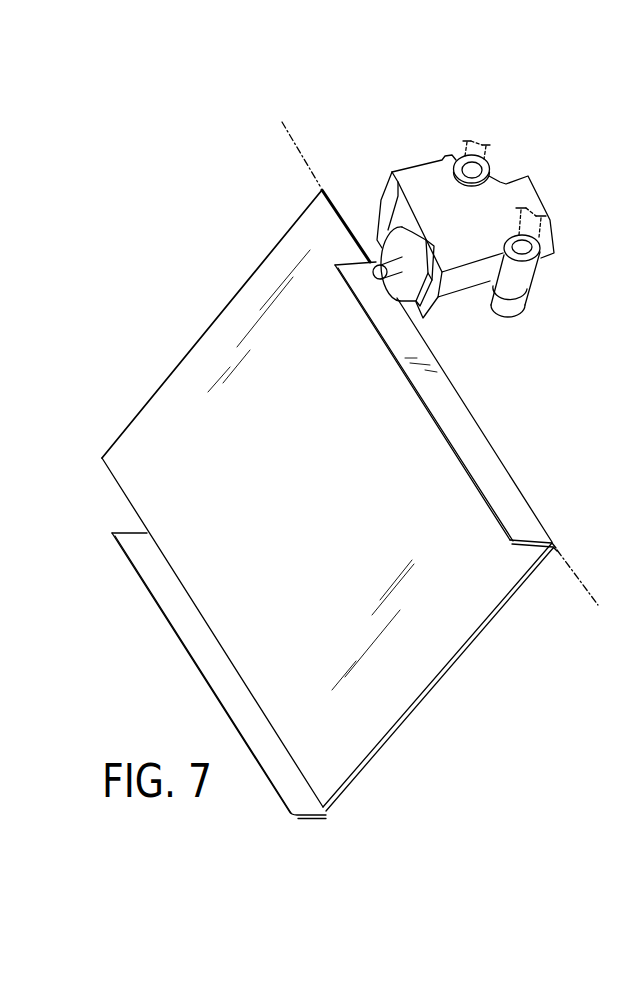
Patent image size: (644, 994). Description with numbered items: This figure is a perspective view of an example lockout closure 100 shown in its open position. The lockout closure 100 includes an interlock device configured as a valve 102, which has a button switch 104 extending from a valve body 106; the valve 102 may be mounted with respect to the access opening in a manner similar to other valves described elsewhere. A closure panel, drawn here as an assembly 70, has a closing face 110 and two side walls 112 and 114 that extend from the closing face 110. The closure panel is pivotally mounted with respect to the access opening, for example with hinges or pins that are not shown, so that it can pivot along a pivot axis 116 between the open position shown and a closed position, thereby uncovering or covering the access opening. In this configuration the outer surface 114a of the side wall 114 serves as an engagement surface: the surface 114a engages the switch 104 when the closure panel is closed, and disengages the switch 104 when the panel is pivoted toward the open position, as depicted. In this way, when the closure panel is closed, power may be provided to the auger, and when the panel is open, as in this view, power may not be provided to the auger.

The lockout closure 100 is at (396, 104).
The plate assembly 70 is at (196, 325).
The valve 102 is at (450, 134).
The button switch 104 is at (432, 298).
The valve body 106 is at (510, 185).
The closing face 110 is at (325, 477).
The side wall 112 is at (193, 635).
The side wall 114 is at (497, 527).
The outer surface 114a is at (472, 443).
The pivot axis 116 is at (338, 210).